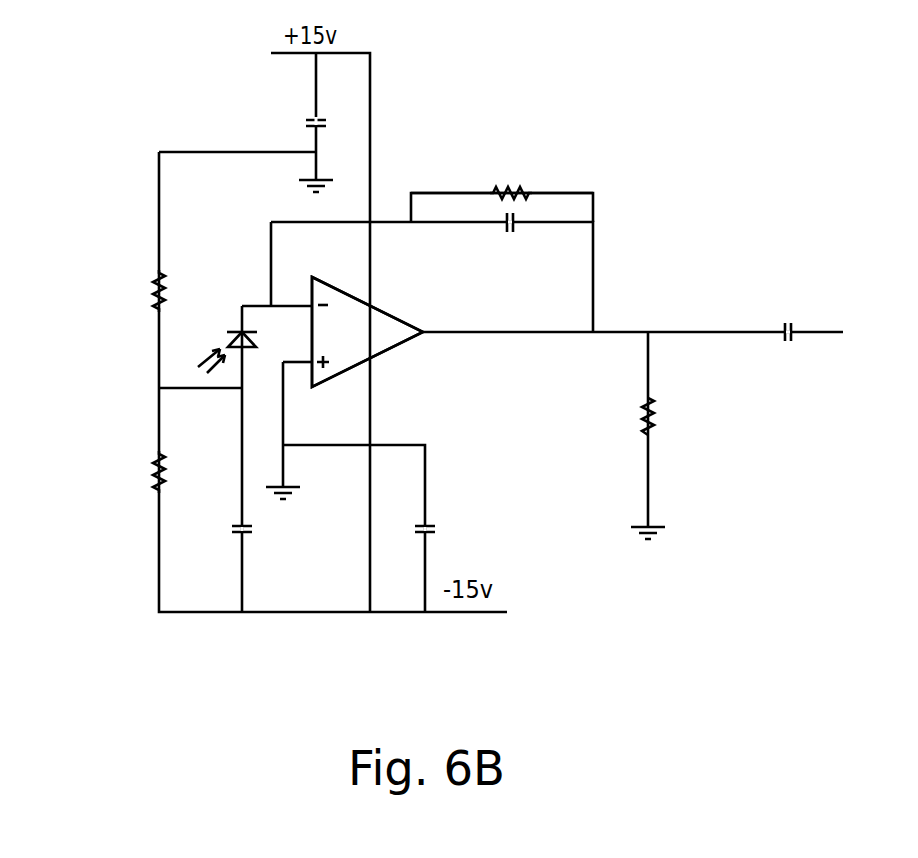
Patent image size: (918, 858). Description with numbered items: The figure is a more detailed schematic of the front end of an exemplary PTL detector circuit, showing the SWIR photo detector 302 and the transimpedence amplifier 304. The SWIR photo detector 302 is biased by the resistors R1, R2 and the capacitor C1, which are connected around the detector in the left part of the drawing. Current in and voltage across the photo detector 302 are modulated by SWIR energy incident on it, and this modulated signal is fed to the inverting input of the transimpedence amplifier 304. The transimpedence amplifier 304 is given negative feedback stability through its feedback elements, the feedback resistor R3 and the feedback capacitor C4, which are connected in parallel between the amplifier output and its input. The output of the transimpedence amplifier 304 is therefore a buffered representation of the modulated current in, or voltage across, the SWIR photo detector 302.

The SWIR photo detector 302 is at (220, 324).
The transimpedence amplifier 304 is at (530, 130).
The resistor R1 is at (131, 291).
The resistor R2 is at (131, 472).
The feedback resistor R3 is at (511, 177).
The capacitor C1 is at (224, 529).
The feedback capacitor C4 is at (511, 237).